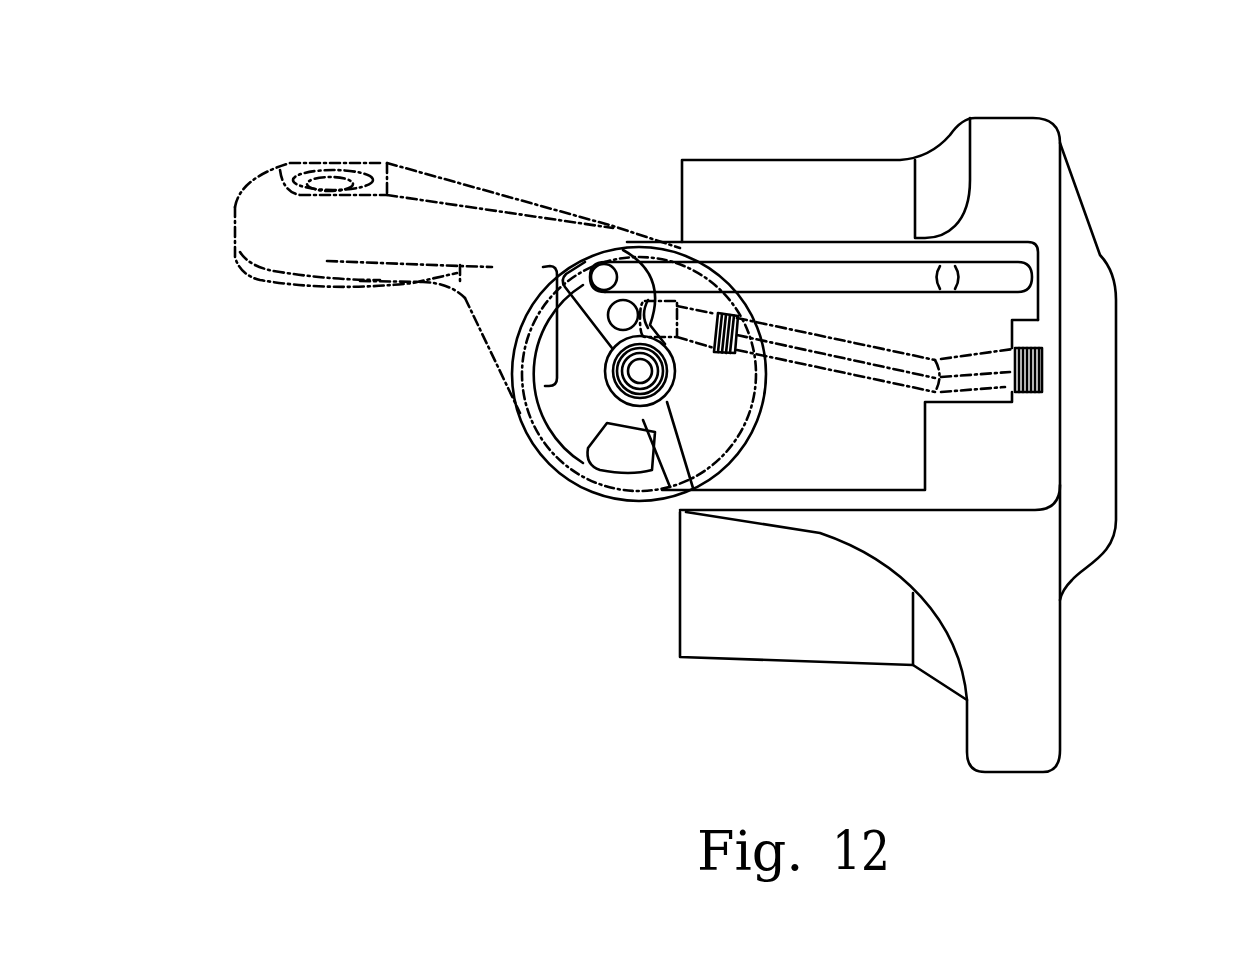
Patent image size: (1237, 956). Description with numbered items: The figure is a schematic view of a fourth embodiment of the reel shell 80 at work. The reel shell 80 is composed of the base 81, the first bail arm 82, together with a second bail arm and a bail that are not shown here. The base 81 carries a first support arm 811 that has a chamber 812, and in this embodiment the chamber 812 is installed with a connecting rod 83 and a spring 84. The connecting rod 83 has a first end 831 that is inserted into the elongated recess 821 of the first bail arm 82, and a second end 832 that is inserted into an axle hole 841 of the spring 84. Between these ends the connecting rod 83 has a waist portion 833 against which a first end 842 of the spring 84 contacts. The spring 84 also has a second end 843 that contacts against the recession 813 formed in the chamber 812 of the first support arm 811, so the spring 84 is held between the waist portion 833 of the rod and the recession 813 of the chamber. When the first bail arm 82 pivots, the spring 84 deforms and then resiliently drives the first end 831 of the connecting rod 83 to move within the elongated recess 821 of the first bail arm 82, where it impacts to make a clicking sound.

The reel shell 80 is at (264, 100).
The base 81 is at (822, 612).
The first support arm 811 is at (838, 520).
The chamber 812 is at (990, 298).
The recession 813 is at (1023, 347).
The first bail arm 82 is at (252, 217).
The elongated recess 821 is at (672, 252).
The connecting rod 83 is at (777, 215).
The first end 831 is at (620, 313).
The second end 832 is at (908, 348).
The waist portion 833 is at (705, 296).
The spring 84 is at (962, 263).
The axle hole 841 is at (757, 316).
The first end 842 is at (697, 330).
The second end 843 is at (1043, 381).